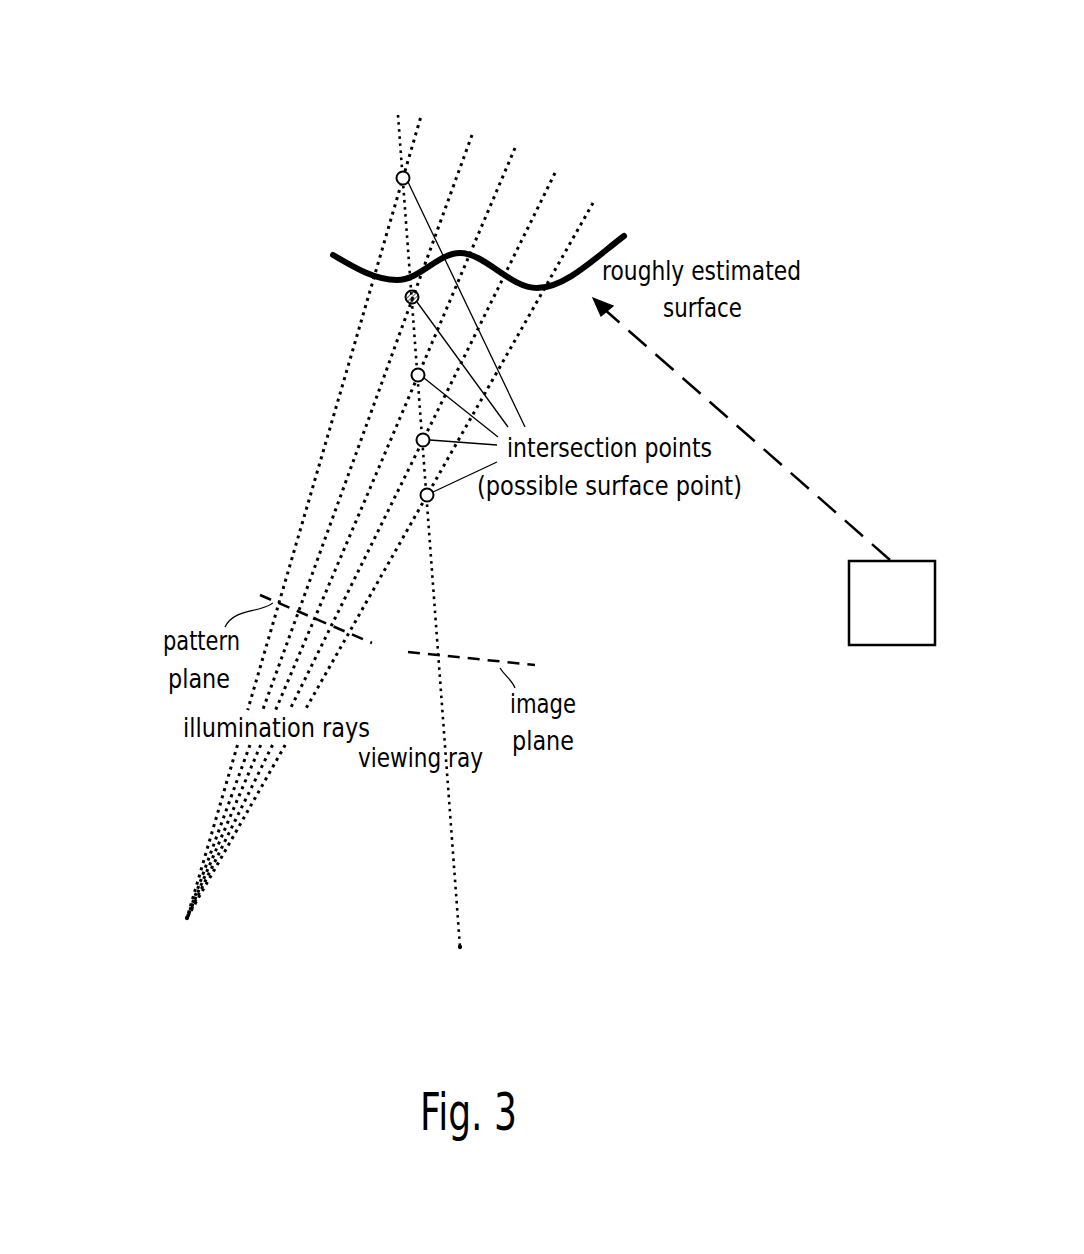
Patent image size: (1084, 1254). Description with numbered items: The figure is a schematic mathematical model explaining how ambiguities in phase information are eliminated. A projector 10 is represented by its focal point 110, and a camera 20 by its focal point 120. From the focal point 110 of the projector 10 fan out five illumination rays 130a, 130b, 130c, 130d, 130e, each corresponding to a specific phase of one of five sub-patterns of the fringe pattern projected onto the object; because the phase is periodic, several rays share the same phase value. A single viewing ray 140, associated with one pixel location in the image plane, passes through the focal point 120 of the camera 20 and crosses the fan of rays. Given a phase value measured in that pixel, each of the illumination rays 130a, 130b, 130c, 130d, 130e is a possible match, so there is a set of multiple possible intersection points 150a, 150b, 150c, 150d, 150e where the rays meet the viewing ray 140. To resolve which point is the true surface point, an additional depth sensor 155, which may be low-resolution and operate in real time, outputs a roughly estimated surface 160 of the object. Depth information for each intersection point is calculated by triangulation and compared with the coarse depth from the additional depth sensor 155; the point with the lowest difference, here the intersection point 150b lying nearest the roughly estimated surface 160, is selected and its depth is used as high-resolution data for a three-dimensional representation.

The projector 10 is at (113, 758).
The camera 20 is at (533, 826).
The focal point 110 is at (182, 956).
The focal point 120 is at (462, 985).
The illumination ray 130a is at (423, 118).
The illumination ray 130b is at (472, 135).
The illumination ray 130c is at (517, 148).
The illumination ray 130d is at (555, 173).
The illumination ray 130e is at (638, 177).
The viewing ray 140 is at (450, 850).
The intersection point 150a is at (397, 178).
The intersection point 150b is at (406, 297).
The intersection point 150c is at (412, 375).
The intersection point 150d is at (417, 440).
The intersection point 150e is at (421, 495).
The additional depth sensor 155 is at (896, 645).
The roughly estimated surface 160 is at (333, 255).